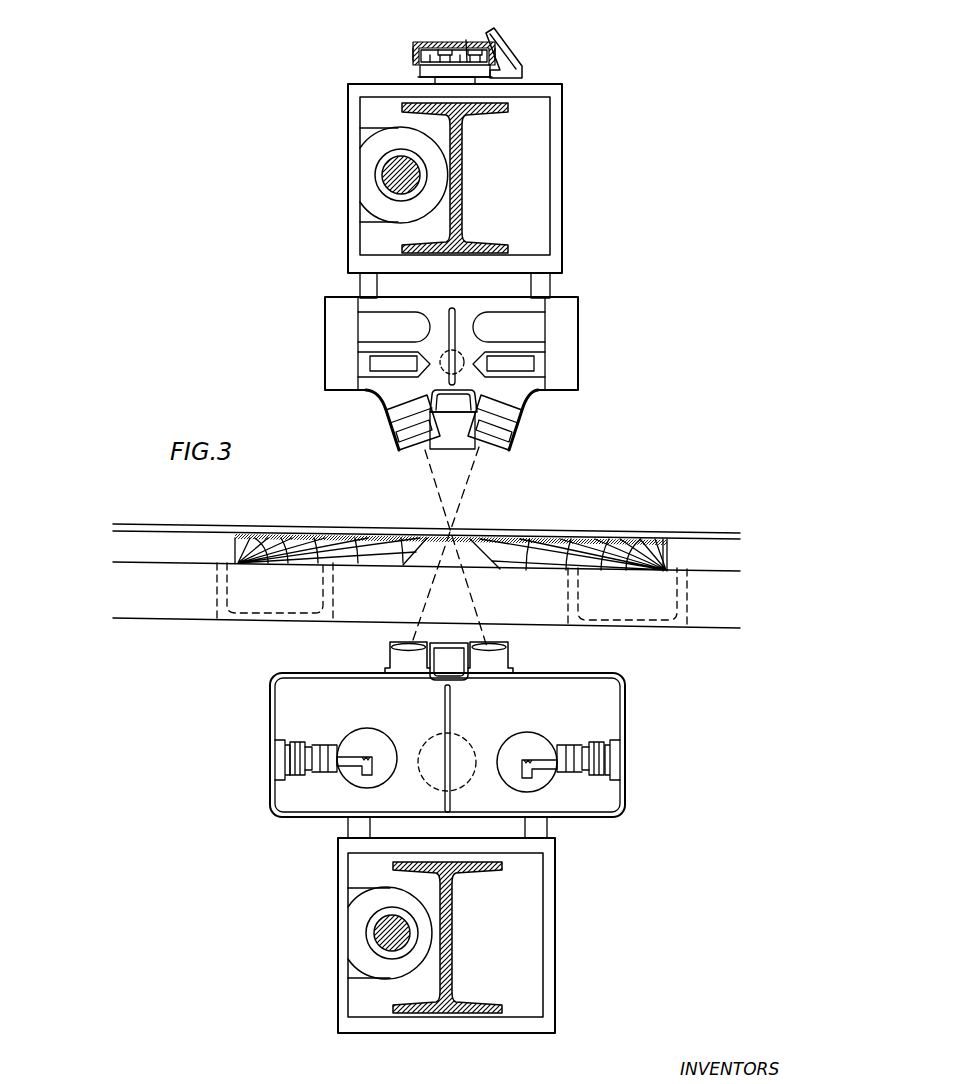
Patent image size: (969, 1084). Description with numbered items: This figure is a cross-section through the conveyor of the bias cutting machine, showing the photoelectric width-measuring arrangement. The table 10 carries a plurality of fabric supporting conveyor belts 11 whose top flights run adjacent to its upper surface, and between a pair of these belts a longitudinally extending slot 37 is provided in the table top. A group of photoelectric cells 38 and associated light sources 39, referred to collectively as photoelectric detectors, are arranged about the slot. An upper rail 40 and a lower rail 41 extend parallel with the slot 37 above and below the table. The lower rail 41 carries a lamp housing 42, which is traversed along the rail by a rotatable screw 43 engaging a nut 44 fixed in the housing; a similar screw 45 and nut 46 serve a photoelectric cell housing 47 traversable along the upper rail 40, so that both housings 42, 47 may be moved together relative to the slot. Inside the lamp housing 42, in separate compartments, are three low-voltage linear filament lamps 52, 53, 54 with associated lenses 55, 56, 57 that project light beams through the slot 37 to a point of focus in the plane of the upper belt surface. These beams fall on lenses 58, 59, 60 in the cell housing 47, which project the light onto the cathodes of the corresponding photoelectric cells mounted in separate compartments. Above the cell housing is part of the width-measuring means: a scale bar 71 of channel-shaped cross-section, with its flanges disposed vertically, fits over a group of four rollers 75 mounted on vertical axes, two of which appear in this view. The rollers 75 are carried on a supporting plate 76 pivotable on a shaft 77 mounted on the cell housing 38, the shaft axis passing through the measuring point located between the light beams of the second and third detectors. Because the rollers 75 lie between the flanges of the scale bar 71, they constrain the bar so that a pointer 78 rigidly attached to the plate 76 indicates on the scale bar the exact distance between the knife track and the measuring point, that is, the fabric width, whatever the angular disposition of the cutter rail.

The table 10 is at (541, 546).
The fabric supporting conveyor belts 11 is at (335, 533).
The longitudinally extending slot 37 is at (468, 540).
The photoelectric cells 38 is at (432, 360).
The light sources 39 is at (470, 766).
The upper rail 40 is at (465, 167).
The lower rail 41 is at (455, 913).
The lamp housing 42 is at (292, 696).
The rotatable screw 43 is at (385, 936).
The nut 44 is at (368, 906).
The screw 45 is at (396, 168).
The nut 46 is at (372, 187).
The photoelectric cell housing 47 is at (338, 358).
The lamp 52 is at (366, 742).
The lamp 53 is at (520, 742).
The lamp 54 is at (461, 742).
The lens 55 is at (402, 657).
The lens 56 is at (495, 658).
The lens 57 is at (462, 650).
The lens 58 is at (500, 437).
The lens 59 is at (405, 425).
The lens 60 is at (452, 447).
The scale bar 71 is at (416, 50).
The rollers 75 is at (438, 52).
The supporting plate 76 is at (466, 40).
The shaft 77 is at (418, 78).
The pointer 78 is at (516, 70).